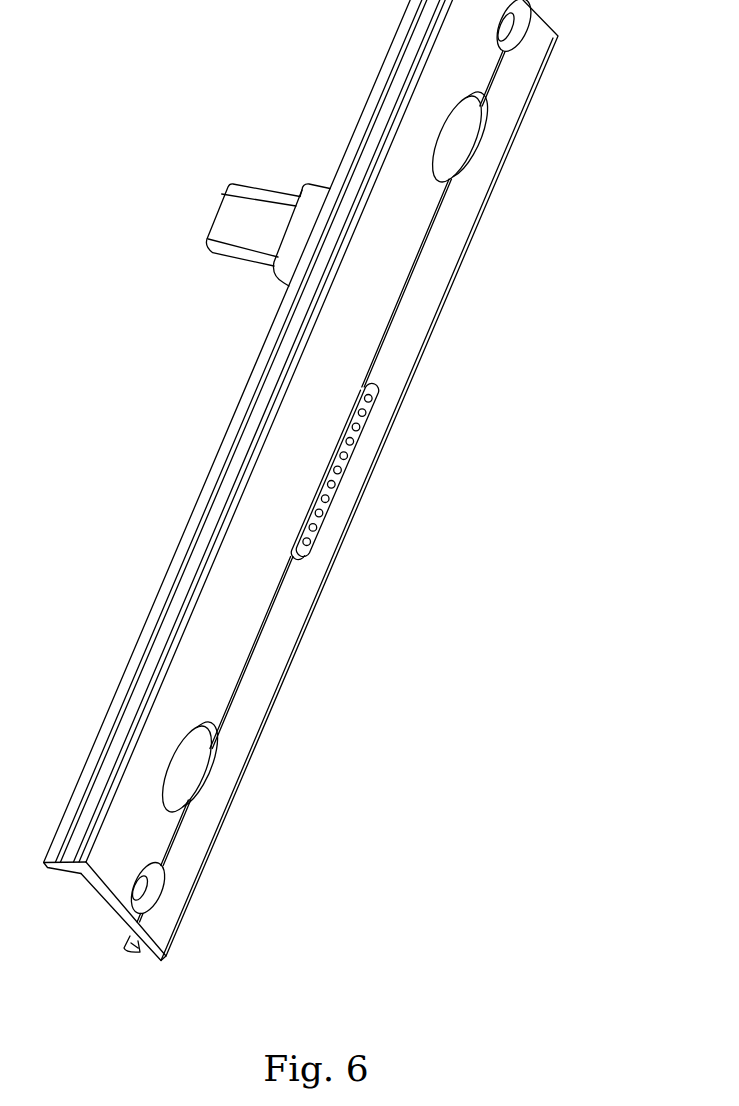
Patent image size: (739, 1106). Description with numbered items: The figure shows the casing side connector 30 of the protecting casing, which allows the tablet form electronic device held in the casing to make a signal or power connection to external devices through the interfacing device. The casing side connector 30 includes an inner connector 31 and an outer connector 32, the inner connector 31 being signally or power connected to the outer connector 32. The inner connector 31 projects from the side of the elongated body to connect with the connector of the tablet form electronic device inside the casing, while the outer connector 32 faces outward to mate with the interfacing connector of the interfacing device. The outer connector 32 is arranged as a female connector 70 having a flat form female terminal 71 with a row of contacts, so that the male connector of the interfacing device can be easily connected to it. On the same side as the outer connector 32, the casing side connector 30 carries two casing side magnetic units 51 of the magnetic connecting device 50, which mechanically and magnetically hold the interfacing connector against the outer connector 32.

The casing side connector 30 is at (158, 602).
The inner connector 31 is at (223, 217).
The outer connector 32 is at (312, 458).
The magnetic connecting device 50 is at (467, 175).
The casing side magnetic unit 51 is at (458, 147).
The female connector 70 is at (335, 488).
The flat form female terminal 71 is at (342, 465).